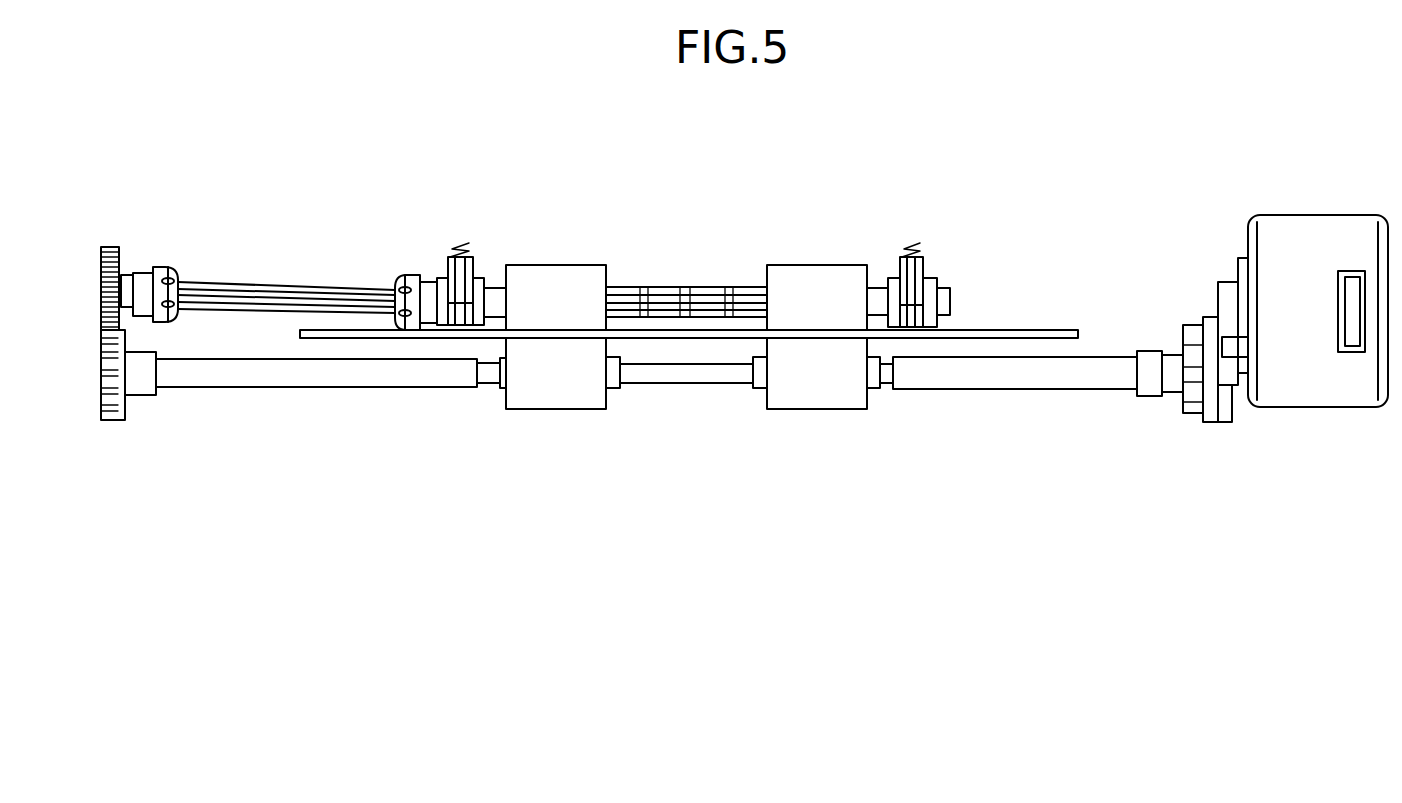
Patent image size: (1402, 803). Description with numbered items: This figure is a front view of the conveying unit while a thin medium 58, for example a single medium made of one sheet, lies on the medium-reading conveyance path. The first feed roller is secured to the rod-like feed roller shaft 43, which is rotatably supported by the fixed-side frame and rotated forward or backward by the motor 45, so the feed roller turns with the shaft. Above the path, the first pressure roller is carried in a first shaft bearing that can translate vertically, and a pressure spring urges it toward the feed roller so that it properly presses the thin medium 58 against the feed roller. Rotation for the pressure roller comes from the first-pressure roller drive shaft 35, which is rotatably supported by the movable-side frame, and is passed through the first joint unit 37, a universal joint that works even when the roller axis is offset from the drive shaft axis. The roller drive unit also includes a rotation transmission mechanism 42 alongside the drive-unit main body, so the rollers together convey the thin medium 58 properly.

The first-pressure roller drive shaft 35 is at (155, 268).
The first joint unit 37 is at (304, 286).
The rotation transmission mechanism 42 is at (106, 236).
The feed roller shaft 43 is at (1020, 393).
The motor 45 is at (1313, 214).
The thin medium 58 is at (669, 329).